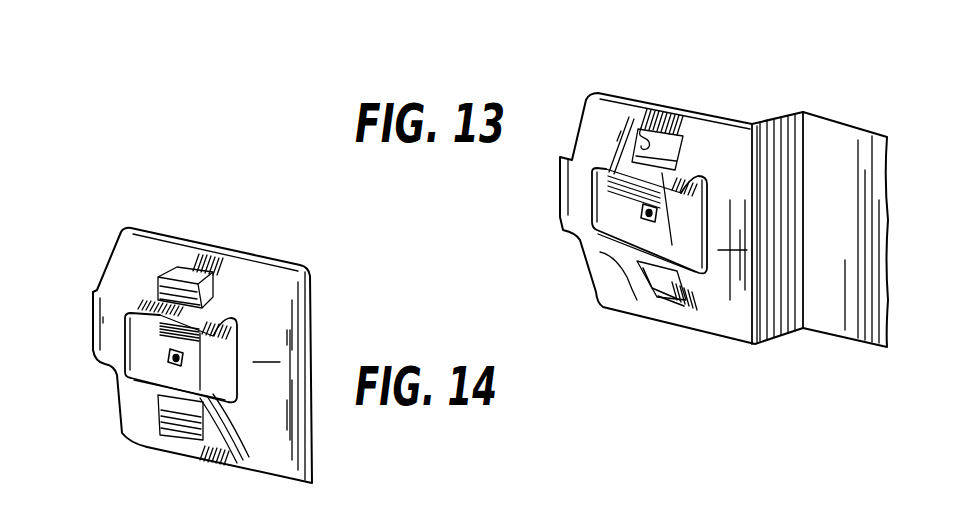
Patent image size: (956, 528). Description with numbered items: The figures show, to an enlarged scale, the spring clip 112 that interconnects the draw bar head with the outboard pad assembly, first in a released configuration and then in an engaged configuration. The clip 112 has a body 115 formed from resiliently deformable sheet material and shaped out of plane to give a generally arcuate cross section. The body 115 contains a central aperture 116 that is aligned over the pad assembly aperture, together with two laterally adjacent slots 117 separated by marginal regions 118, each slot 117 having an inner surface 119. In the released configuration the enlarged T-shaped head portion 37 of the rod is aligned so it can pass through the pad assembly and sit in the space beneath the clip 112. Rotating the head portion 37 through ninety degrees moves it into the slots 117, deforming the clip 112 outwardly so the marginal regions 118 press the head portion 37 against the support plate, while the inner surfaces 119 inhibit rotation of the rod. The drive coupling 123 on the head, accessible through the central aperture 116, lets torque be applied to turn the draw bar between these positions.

In FIG. 13, the spring clip 112 is at (585, 285).
In FIG. 14, the spring clip 112 is at (270, 247).
In FIG. 13, the body 115 is at (732, 250).
In FIG. 14, the body 115 is at (271, 385).
In FIG. 13, the central aperture 116 is at (597, 190).
In FIG. 14, the central aperture 116 is at (137, 333).
In FIG. 13, the slots 117 is at (663, 130).
In FIG. 14, the slots 117 is at (190, 263).
In FIG. 14, the marginal regions 118 is at (160, 307).
In FIG. 13, the inner surface 119 is at (640, 150).
In FIG. 13, the drive coupling 123 is at (642, 208).
In FIG. 14, the drive coupling 123 is at (166, 353).
In FIG. 13, the head portion 37 is at (667, 213).
In FIG. 14, the head portion 37 is at (190, 337).